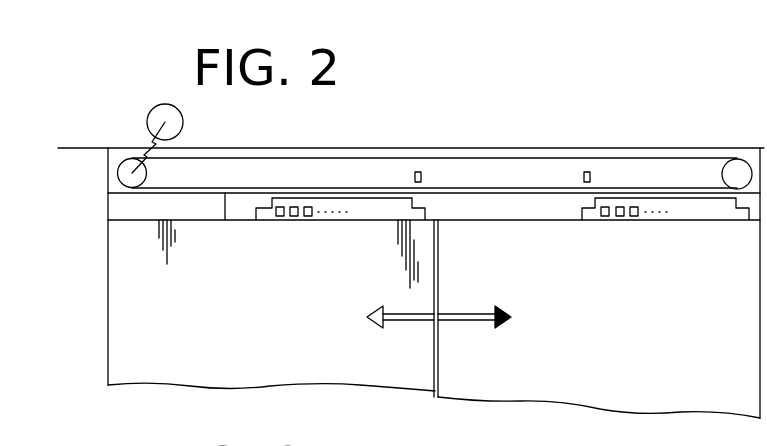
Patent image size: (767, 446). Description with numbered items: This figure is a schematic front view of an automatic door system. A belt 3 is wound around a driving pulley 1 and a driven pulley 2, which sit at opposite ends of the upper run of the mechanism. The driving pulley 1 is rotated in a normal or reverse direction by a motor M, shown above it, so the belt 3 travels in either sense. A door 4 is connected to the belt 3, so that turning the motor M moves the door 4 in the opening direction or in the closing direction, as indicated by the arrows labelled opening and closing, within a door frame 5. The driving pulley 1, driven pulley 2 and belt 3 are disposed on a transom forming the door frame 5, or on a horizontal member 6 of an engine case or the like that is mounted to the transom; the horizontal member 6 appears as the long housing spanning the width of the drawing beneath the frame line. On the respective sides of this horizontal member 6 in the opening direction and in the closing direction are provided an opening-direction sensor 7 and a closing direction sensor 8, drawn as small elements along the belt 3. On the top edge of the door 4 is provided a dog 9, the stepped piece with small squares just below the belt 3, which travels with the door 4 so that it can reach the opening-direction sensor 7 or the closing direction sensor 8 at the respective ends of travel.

The driving pulley 1 is at (146, 180).
The driven pulley 2 is at (723, 173).
The belt 3 is at (481, 158).
The door 4 is at (333, 373).
The door frame 5 is at (77, 155).
The horizontal member 6 is at (541, 148).
The opening-direction sensor 7 is at (423, 176).
The closing direction sensor 8 is at (592, 176).
The dog 9 is at (333, 205).
The motor M is at (184, 124).